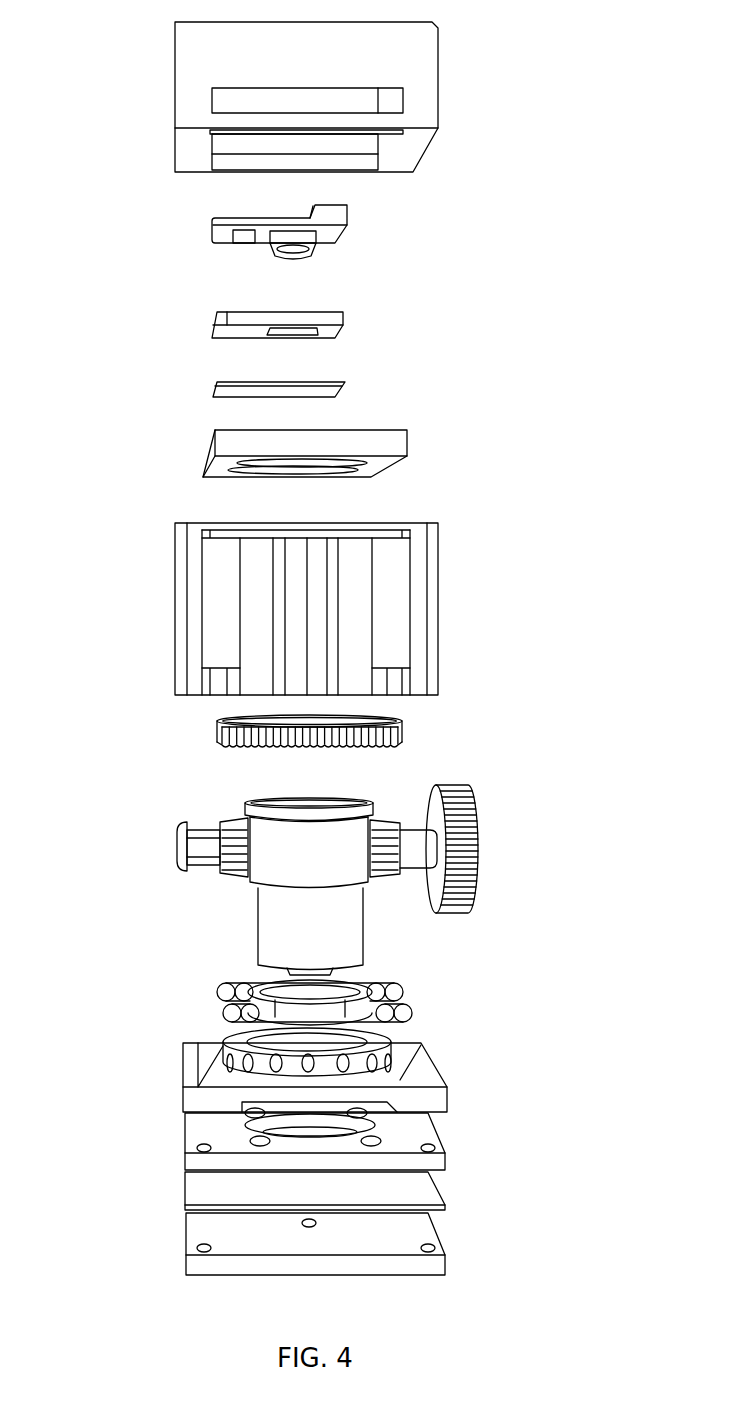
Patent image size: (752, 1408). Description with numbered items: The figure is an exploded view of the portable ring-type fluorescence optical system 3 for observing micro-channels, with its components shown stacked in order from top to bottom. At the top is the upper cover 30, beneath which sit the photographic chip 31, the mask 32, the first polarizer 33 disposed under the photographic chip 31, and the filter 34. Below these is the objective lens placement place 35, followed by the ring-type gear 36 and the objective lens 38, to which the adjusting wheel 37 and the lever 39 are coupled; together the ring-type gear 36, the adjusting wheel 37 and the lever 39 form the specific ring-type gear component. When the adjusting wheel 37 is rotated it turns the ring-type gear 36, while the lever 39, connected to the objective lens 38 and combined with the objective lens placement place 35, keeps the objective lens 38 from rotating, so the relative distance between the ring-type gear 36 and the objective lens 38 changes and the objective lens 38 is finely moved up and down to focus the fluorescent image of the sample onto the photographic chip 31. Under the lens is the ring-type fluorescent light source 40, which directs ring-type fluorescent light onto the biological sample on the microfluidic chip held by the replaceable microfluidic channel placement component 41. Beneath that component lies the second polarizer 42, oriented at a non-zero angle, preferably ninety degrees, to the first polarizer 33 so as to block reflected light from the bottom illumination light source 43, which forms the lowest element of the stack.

The portable ring-type fluorescence optical system 3 is at (44, 23).
The upper cover 30 is at (425, 55).
The photographic chip 31 is at (356, 232).
The mask 32 is at (347, 313).
The first polarizer 33 is at (345, 382).
The filter 34 is at (387, 440).
The objective lens placement place 35 is at (433, 550).
The ring-type gear 36 is at (405, 728).
The adjusting wheel 37 is at (460, 830).
The objective lens 38 is at (348, 925).
The lever 39 is at (390, 993).
The ring-type fluorescent light source 40 is at (377, 1042).
The replaceable microfluidic channel placement component 41 is at (425, 1060).
The second polarizer 42 is at (428, 1195).
The bottom illumination light source 43 is at (428, 1240).